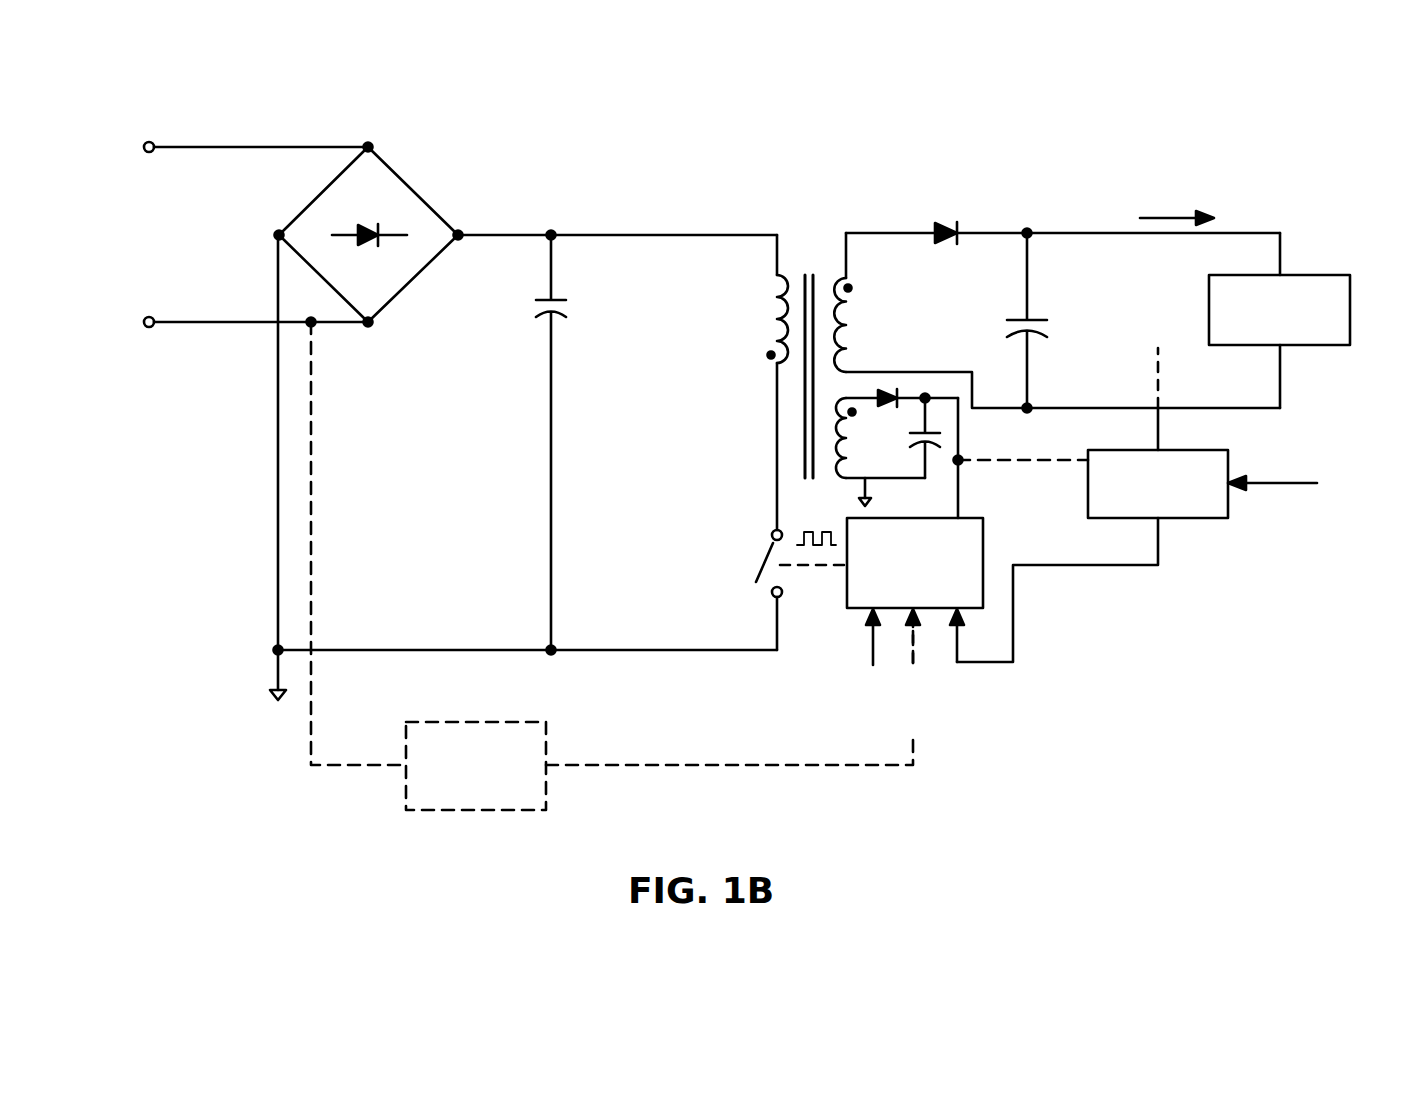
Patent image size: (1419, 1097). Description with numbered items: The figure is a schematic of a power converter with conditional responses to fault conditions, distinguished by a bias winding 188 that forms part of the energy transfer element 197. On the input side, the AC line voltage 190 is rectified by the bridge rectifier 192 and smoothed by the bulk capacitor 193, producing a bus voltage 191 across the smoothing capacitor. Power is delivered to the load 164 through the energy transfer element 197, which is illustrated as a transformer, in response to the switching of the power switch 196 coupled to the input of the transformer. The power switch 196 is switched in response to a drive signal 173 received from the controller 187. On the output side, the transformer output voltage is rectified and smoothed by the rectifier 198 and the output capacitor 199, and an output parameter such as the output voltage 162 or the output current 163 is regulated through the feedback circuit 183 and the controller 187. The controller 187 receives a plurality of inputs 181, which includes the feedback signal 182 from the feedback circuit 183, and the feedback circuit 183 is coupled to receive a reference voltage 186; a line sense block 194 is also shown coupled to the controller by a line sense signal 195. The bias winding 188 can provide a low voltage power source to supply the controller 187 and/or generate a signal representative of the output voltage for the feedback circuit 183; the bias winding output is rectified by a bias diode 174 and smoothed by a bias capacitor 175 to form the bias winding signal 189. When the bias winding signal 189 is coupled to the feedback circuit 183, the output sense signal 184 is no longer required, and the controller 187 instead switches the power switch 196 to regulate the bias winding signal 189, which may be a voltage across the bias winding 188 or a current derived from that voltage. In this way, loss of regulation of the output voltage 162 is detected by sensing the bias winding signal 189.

The AC line voltage VIN 190 is at (118, 250).
The bridge rectifier BR1 192 is at (418, 182).
The bulk capacitor C1 193 is at (571, 330).
The bus voltage VBUS 191 is at (438, 460).
The energy transfer element T1 197 is at (810, 240).
The rectifier D1 198 is at (930, 228).
The capacitor C2 199 is at (1018, 318).
The output voltage Vo 162 is at (1113, 310).
The output current IO 163 is at (1186, 185).
The load 164 is at (1310, 275).
The bias winding 188 is at (832, 450).
The bias diode 174 is at (888, 380).
The bias capacitor 175 is at (907, 436).
The bias winding signal 189 is at (958, 472).
The drive signal 173 is at (808, 530).
The power switch S1 196 is at (748, 540).
The controller 187 is at (852, 622).
The plurality of inputs 181 is at (978, 715).
The feedback signal UFB 182 is at (1125, 580).
The feedback circuit 183 is at (1086, 487).
The signal 184 is at (1148, 432).
The reference voltage UREF 186 is at (1286, 492).
The line sense circuit 194 is at (400, 790).
The line sense signal 195 is at (630, 760).